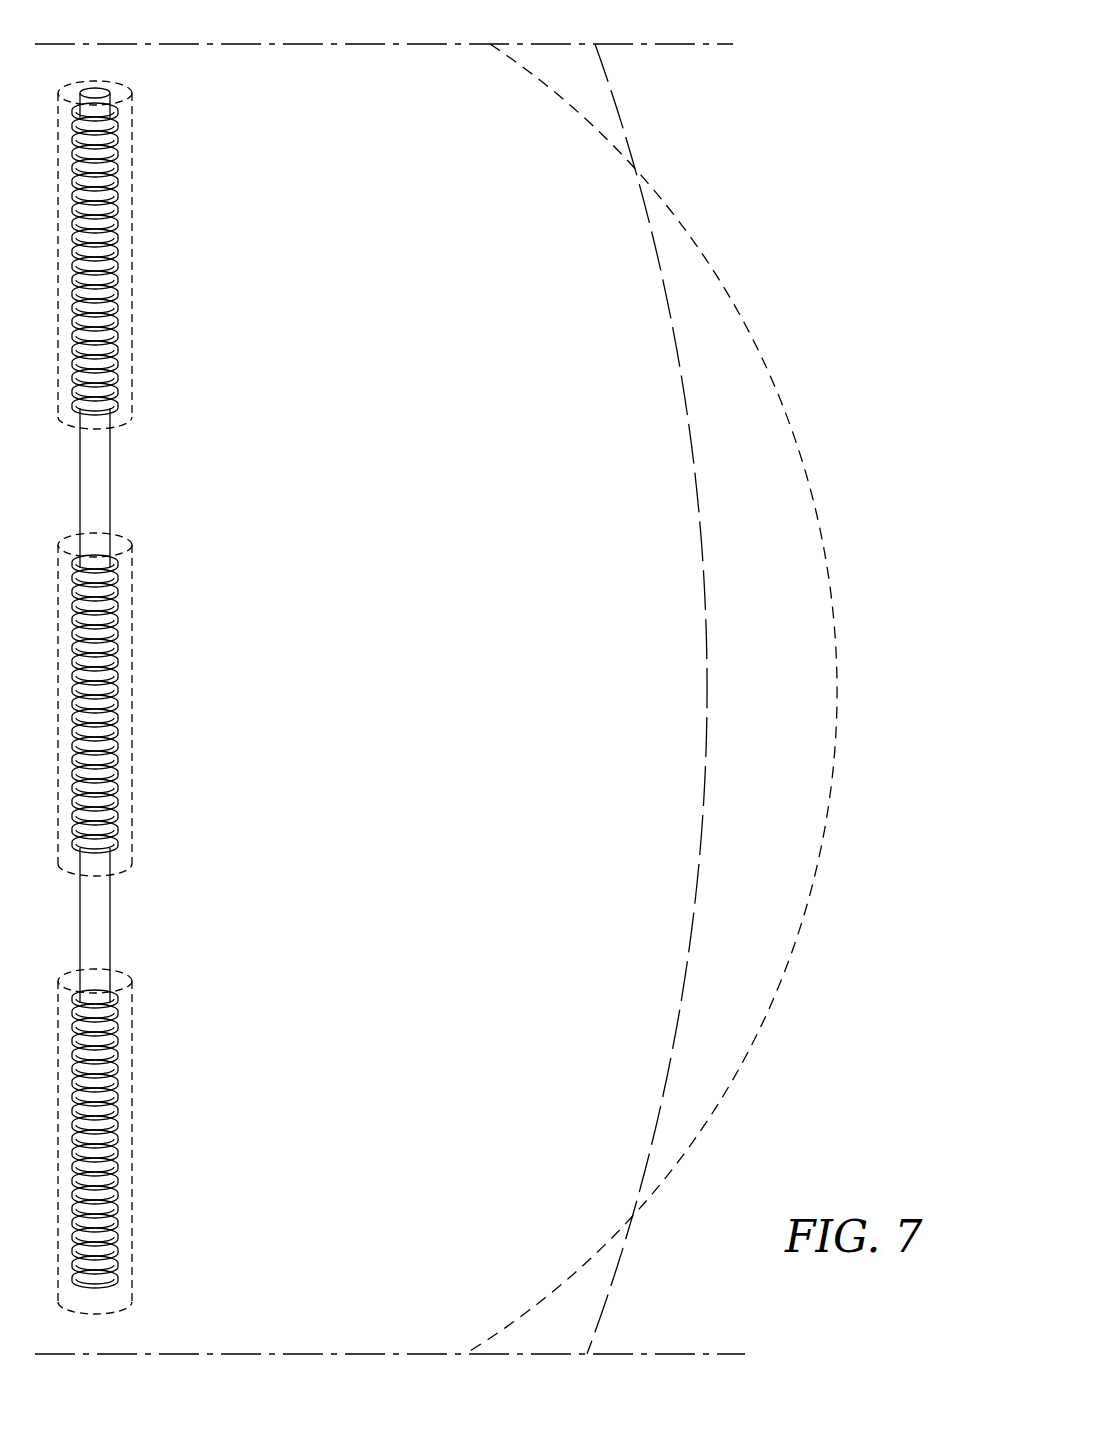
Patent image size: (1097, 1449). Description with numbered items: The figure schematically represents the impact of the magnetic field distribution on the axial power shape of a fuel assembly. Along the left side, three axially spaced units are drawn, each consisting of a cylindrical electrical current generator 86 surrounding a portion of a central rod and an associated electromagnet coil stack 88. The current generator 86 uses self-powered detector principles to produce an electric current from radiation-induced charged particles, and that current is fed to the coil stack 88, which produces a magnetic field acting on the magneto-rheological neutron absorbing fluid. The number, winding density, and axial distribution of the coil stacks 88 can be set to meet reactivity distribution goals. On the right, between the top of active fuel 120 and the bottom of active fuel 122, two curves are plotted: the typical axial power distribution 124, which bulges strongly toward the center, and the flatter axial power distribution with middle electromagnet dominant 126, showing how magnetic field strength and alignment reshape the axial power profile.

The electrical current generator 86 is at (133, 207).
The electromagnet coil stack 88 is at (118, 143).
The top of active fuel 120 is at (713, 44).
The bottom of active fuel 122 is at (735, 1354).
The typical axial power distribution 124 is at (783, 408).
The axial power distribution with middle electromagnet dominant 126 is at (692, 470).